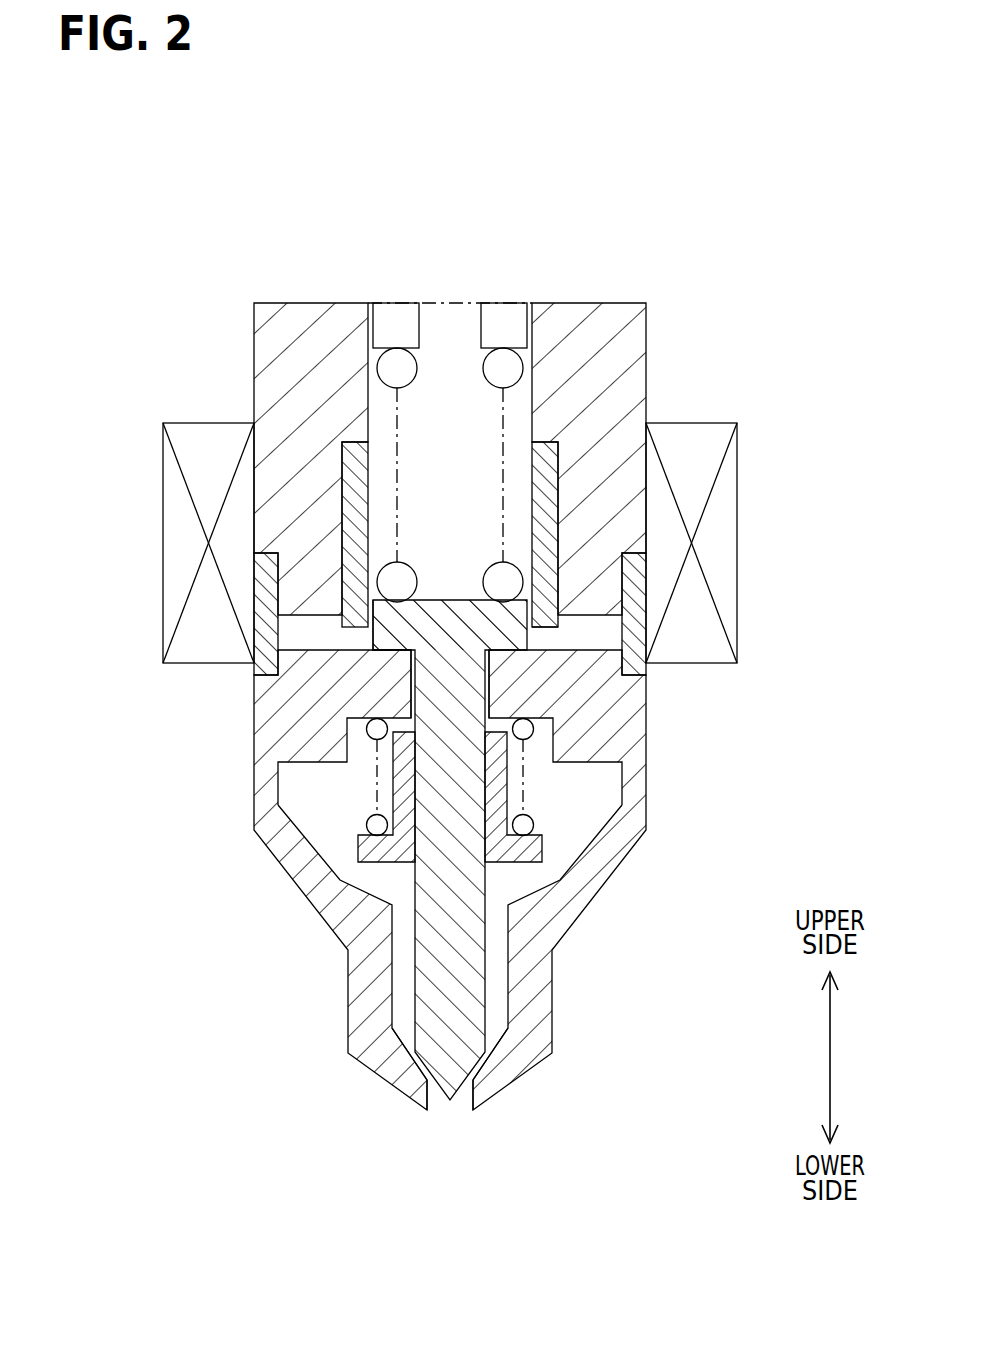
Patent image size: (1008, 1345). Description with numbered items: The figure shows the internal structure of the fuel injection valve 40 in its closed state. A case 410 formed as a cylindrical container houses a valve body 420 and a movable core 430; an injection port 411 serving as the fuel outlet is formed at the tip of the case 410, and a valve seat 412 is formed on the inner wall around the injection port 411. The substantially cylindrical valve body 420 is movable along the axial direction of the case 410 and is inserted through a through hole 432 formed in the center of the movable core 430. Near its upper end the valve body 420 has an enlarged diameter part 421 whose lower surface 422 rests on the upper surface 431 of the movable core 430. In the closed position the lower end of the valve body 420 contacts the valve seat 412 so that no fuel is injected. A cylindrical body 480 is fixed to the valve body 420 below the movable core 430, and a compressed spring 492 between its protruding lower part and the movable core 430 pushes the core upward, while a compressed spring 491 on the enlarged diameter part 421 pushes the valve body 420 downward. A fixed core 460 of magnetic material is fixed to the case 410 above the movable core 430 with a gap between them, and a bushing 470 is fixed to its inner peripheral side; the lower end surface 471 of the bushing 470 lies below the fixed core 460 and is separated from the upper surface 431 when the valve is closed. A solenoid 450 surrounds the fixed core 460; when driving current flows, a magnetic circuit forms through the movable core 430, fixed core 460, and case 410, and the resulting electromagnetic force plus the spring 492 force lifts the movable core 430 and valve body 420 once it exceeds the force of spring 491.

The fuel injection valve 40 is at (768, 262).
The case 410 is at (592, 900).
The injection port 411 is at (460, 1107).
The valve seat 412 is at (442, 1093).
The valve body 420 is at (475, 1023).
The enlarged diameter part 421 is at (390, 630).
The lower surface 422 is at (395, 655).
The movable core 430 is at (297, 700).
The upper surface 431 is at (310, 650).
The through hole 432 is at (481, 678).
The solenoid 450 is at (200, 527).
The fixed core 460 is at (272, 333).
The bushing 470 is at (548, 458).
The lower end surface 471 is at (549, 640).
The cylindrical body 480 is at (383, 860).
The spring 491 is at (486, 370).
The spring 492 is at (363, 830).